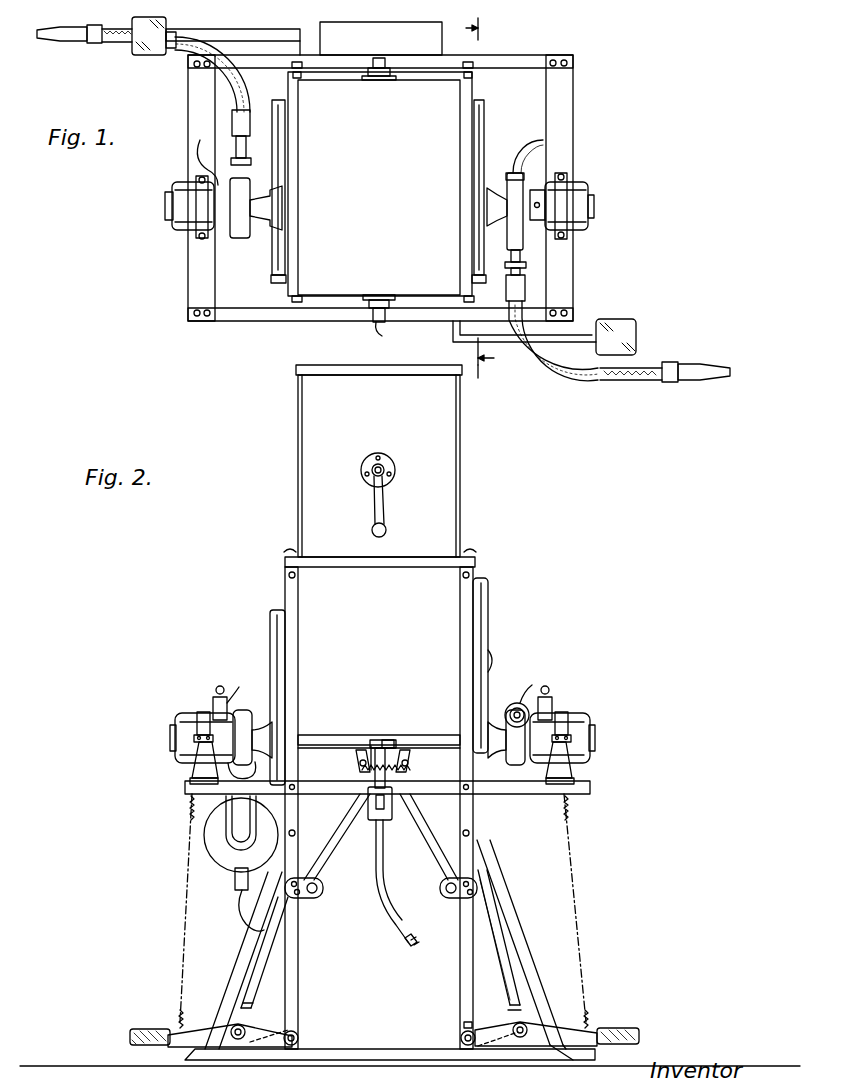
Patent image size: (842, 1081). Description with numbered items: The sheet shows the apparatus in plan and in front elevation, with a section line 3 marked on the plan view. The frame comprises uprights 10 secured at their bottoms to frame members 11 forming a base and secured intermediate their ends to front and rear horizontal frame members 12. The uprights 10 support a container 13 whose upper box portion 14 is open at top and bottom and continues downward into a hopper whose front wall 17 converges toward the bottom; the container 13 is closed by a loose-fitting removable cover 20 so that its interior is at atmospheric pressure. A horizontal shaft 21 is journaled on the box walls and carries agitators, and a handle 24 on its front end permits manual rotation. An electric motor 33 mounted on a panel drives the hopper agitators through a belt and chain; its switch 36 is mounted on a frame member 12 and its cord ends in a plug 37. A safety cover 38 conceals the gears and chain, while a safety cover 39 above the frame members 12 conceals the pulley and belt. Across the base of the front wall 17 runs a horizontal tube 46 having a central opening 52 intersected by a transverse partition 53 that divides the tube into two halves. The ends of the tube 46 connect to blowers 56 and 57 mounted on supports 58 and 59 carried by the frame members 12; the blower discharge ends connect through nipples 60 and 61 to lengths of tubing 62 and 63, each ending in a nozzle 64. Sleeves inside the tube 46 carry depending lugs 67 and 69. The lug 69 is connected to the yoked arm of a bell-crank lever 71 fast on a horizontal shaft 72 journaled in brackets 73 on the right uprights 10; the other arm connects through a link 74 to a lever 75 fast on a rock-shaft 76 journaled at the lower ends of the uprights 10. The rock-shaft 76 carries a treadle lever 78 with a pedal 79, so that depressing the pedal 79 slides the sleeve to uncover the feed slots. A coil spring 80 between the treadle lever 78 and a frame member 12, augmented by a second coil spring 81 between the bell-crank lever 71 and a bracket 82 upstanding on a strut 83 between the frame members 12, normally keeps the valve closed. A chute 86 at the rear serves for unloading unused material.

In FIG. 1, the section line 3 is at (486, 194).
In FIG. 2, the uprights 10 is at (290, 636).
In FIG. 2, the frame members 11 is at (370, 1048).
In FIG. 1, the horizontal frame members 12 is at (522, 64).
In FIG. 2, the horizontal frame members 12 is at (515, 794).
In FIG. 2, the container 13 is at (472, 513).
In FIG. 2, the box portion 14 is at (446, 464).
In FIG. 2, the front wall 17 is at (380, 579).
In FIG. 1, the cover 20 is at (380, 184).
In FIG. 2, the cover 20 is at (462, 370).
In FIG. 1, the horizontal shaft 21 is at (382, 62).
In FIG. 2, the horizontal shaft 21 is at (382, 464).
In FIG. 1, the handle 24 is at (375, 333).
In FIG. 2, the handle 24 is at (384, 505).
In FIG. 2, the electric motor 33 is at (230, 832).
In FIG. 2, the switch 36 is at (368, 820).
In FIG. 2, the plug 37 is at (408, 944).
In FIG. 1, the safety cover 38 is at (480, 150).
In FIG. 2, the safety cover 38 is at (482, 618).
In FIG. 1, the safety cover 39 is at (280, 276).
In FIG. 2, the safety cover 39 is at (272, 650).
In FIG. 2, the horizontal tube 46 is at (432, 736).
In FIG. 2, the opening 52 is at (390, 740).
In FIG. 2, the transverse partition 53 is at (376, 740).
In FIG. 1, the blower 56 is at (248, 196).
In FIG. 2, the blower 56 is at (218, 724).
In FIG. 1, the blower 57 is at (516, 178).
In FIG. 2, the blower 57 is at (540, 730).
In FIG. 1, the support 58 is at (192, 277).
In FIG. 2, the support 58 is at (184, 786).
In FIG. 1, the support 59 is at (563, 104).
In FIG. 2, the support 59 is at (572, 783).
In FIG. 1, the nipple 60 is at (251, 132).
In FIG. 1, the nipple 61 is at (506, 285).
In FIG. 1, the tubing 62 is at (175, 50).
In FIG. 1, the tubing 63 is at (575, 383).
In FIG. 2, the tubing 63 is at (516, 704).
In FIG. 1, the nozzle 64 is at (78, 48).
In FIG. 2, the depending lug 67 is at (360, 752).
In FIG. 2, the depending lug 69 is at (406, 752).
In FIG. 2, the bell-crank lever 71 is at (430, 832).
In FIG. 2, the horizontal shaft 72 is at (448, 898).
In FIG. 2, the brackets 73 is at (446, 888).
In FIG. 2, the link 74 is at (502, 938).
In FIG. 2, the lever 75 is at (504, 1030).
In FIG. 2, the rock-shaft 76 is at (460, 1034).
In FIG. 1, the treadle lever 78 is at (560, 346).
In FIG. 2, the treadle lever 78 is at (520, 1038).
In FIG. 1, the pedal 79 is at (612, 332).
In FIG. 2, the pedal 79 is at (617, 1030).
In FIG. 2, the coil spring 80 is at (580, 811).
In FIG. 2, the coil spring 81 is at (362, 770).
In FIG. 2, the bracket 82 is at (367, 743).
In FIG. 2, the strut 83 is at (375, 795).
In FIG. 1, the chute 86 is at (368, 36).
In FIG. 2, the chute 86 is at (332, 794).